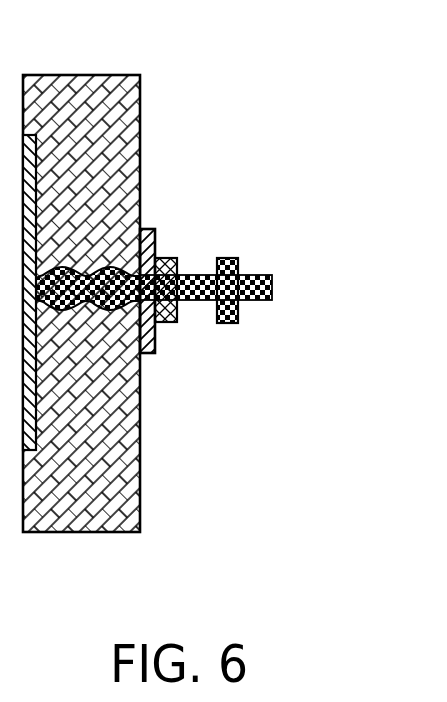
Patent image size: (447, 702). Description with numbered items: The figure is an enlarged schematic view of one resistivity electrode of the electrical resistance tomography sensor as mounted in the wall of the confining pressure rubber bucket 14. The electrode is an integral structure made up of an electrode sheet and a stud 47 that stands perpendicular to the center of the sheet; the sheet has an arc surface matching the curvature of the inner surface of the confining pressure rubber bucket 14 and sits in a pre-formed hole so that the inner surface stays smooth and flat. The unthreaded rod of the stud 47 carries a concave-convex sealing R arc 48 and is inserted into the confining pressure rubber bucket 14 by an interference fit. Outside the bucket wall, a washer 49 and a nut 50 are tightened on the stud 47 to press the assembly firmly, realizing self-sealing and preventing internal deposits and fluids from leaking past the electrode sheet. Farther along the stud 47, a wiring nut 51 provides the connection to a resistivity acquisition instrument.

The confining pressure rubber bucket 14 is at (143, 75).
The stud 47 is at (274, 302).
The concave-convex sealing R arc 48 is at (107, 313).
The washer 49 is at (157, 228).
The nut 50 is at (168, 258).
The wiring nut 51 is at (233, 327).